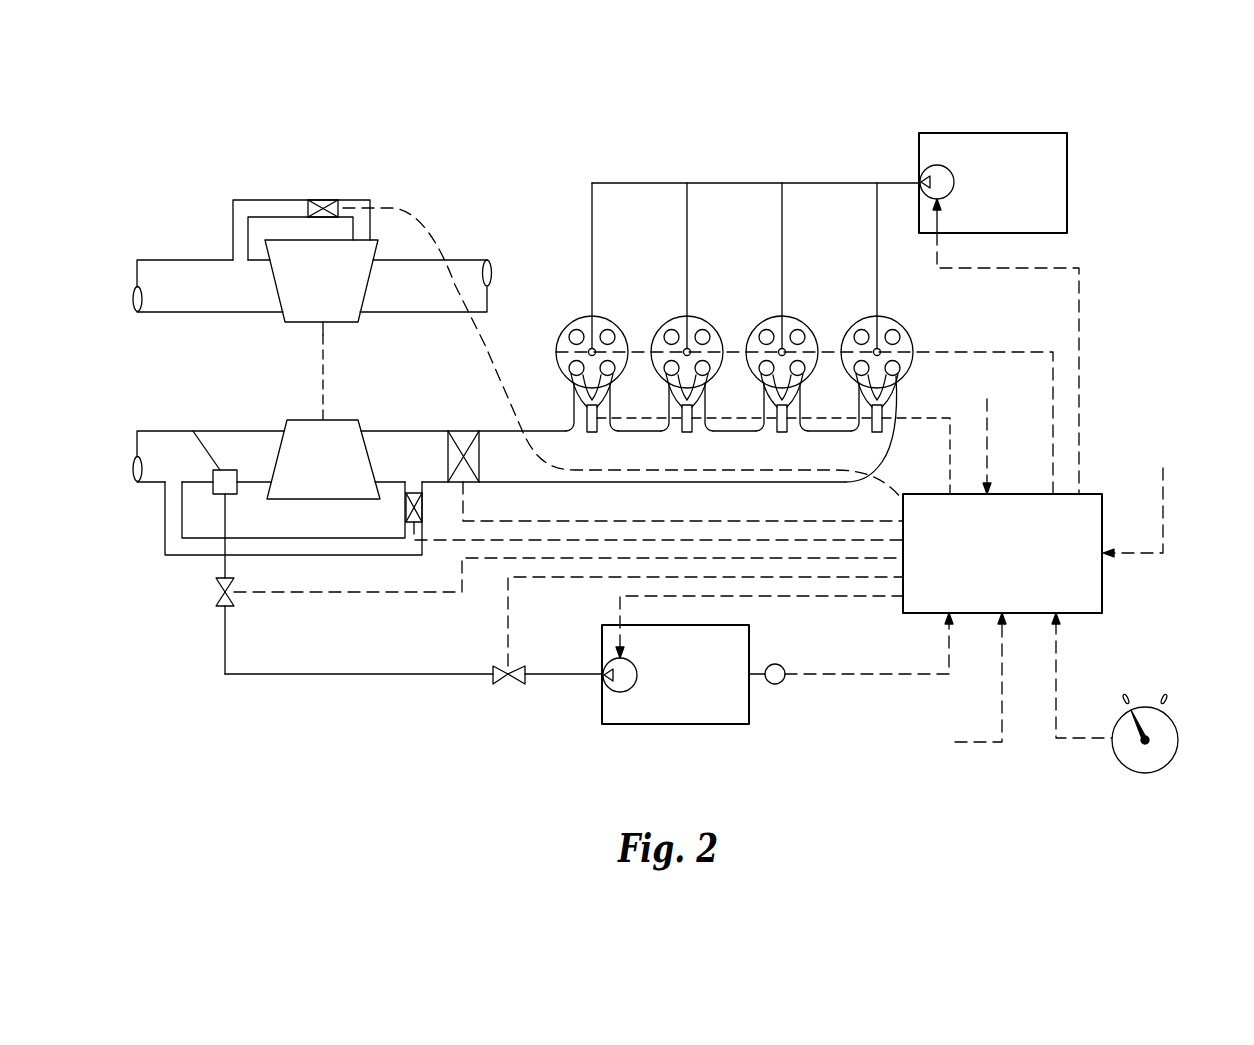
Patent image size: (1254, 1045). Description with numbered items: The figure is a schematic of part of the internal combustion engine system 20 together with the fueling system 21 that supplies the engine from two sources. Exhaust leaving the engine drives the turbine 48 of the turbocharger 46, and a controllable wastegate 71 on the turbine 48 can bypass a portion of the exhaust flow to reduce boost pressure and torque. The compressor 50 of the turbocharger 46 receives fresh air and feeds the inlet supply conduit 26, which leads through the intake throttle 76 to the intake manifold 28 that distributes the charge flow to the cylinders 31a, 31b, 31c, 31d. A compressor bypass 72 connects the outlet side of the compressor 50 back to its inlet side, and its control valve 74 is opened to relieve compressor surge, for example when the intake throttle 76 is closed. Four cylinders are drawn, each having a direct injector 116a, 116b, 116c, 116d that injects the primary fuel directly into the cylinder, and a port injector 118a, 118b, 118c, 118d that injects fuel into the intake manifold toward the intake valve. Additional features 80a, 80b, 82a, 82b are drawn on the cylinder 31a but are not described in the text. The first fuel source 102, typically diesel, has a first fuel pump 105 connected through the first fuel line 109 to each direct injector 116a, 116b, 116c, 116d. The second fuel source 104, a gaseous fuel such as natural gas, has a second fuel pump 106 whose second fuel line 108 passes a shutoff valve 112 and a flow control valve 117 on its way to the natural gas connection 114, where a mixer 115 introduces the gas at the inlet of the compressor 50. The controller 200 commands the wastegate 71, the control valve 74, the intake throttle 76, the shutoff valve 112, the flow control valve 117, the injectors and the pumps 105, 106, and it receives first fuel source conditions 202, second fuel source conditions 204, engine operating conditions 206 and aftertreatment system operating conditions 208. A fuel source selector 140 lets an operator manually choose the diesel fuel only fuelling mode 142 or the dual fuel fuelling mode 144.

The internal combustion engine system 20 is at (489, 160).
The fueling system 21 is at (1135, 307).
The inlet supply conduit 26 is at (291, 430).
The intake manifold 28 is at (665, 475).
The cylinder 31a is at (883, 362).
The cylinder 31b is at (782, 350).
The cylinder 31c is at (687, 350).
The cylinder 31d is at (592, 350).
The turbocharger 46 is at (277, 371).
The turbine 48 is at (321, 281).
The compressor 50 is at (323, 459).
The wastegate 71 is at (568, 316).
The compressor bypass 72 is at (284, 550).
The control valve 74 is at (643, 460).
The intake throttle 76 is at (673, 439).
The intake port 80a is at (885, 422).
The intake port 80b is at (842, 380).
The exhaust port 82a is at (928, 323).
The exhaust port 82b is at (832, 294).
The first fuel source 102 is at (993, 183).
The second fuel source 104 is at (675, 674).
The first fuel pump 105 is at (999, 294).
The second fuel pump 106 is at (753, 684).
The second fuel line 108 is at (413, 713).
The first fuel line 109 is at (756, 161).
The shutoff valve 112 is at (528, 618).
The natural gas connection 114 is at (174, 536).
The mixer 115 is at (215, 434).
The direct injector 116a is at (897, 269).
The direct injector 116b is at (802, 269).
The direct injector 116c is at (707, 269).
The direct injector 116d is at (612, 269).
The flow control valve 117 is at (698, 668).
The port injector 118a is at (773, 445).
The port injector 118b is at (748, 410).
The port injector 118c is at (653, 410).
The port injector 118d is at (559, 410).
The fuel source selector 140 is at (1115, 709).
The diesel fuel only fuelling mode 142 is at (1106, 642).
The dual fuel fuelling mode 144 is at (1190, 638).
The controller 200 is at (1002, 553).
The first fuel source conditions 202 is at (1163, 465).
The second fuel source conditions 204 is at (851, 648).
The engine operating conditions 206 is at (985, 426).
The aftertreatment system operating conditions 208 is at (918, 724).